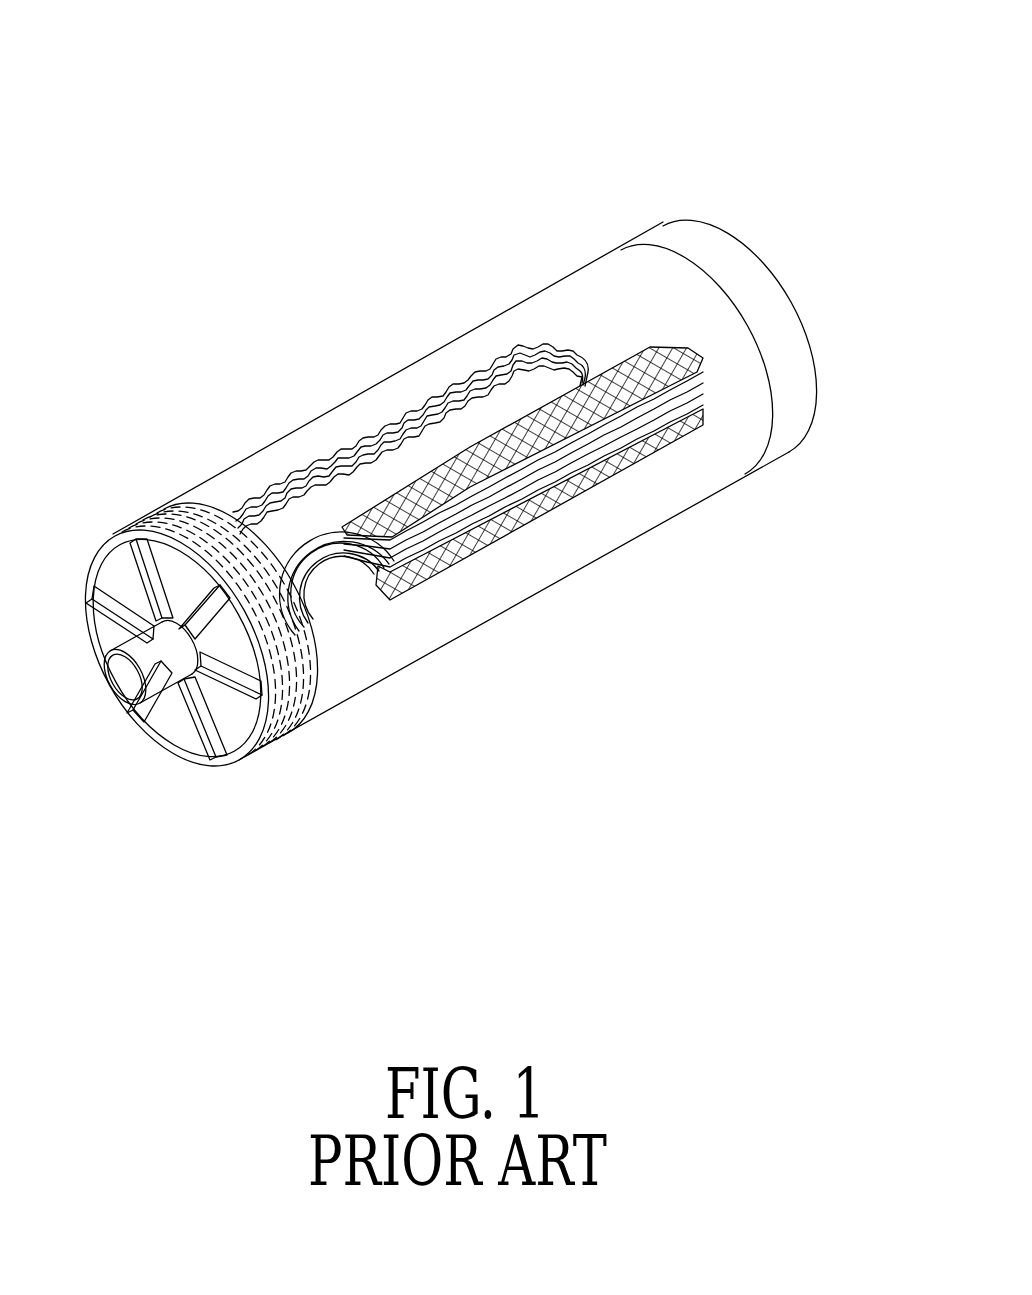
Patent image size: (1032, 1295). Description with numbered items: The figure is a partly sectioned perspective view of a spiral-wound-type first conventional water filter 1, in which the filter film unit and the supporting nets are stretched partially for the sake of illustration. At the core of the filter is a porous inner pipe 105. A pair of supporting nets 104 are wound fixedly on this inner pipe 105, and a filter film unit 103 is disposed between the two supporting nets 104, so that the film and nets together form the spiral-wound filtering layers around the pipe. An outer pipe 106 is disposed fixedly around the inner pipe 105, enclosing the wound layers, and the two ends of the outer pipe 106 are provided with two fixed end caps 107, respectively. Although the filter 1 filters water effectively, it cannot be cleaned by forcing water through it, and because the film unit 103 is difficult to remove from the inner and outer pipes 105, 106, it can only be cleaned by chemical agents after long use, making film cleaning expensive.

The first conventional water filter 1 is at (357, 372).
The filter film unit 103 is at (695, 393).
The supporting nets 104 is at (683, 345).
The porous inner pipe 105 is at (128, 680).
The outer pipe 106 is at (603, 276).
The fixed end caps 107 is at (670, 228).